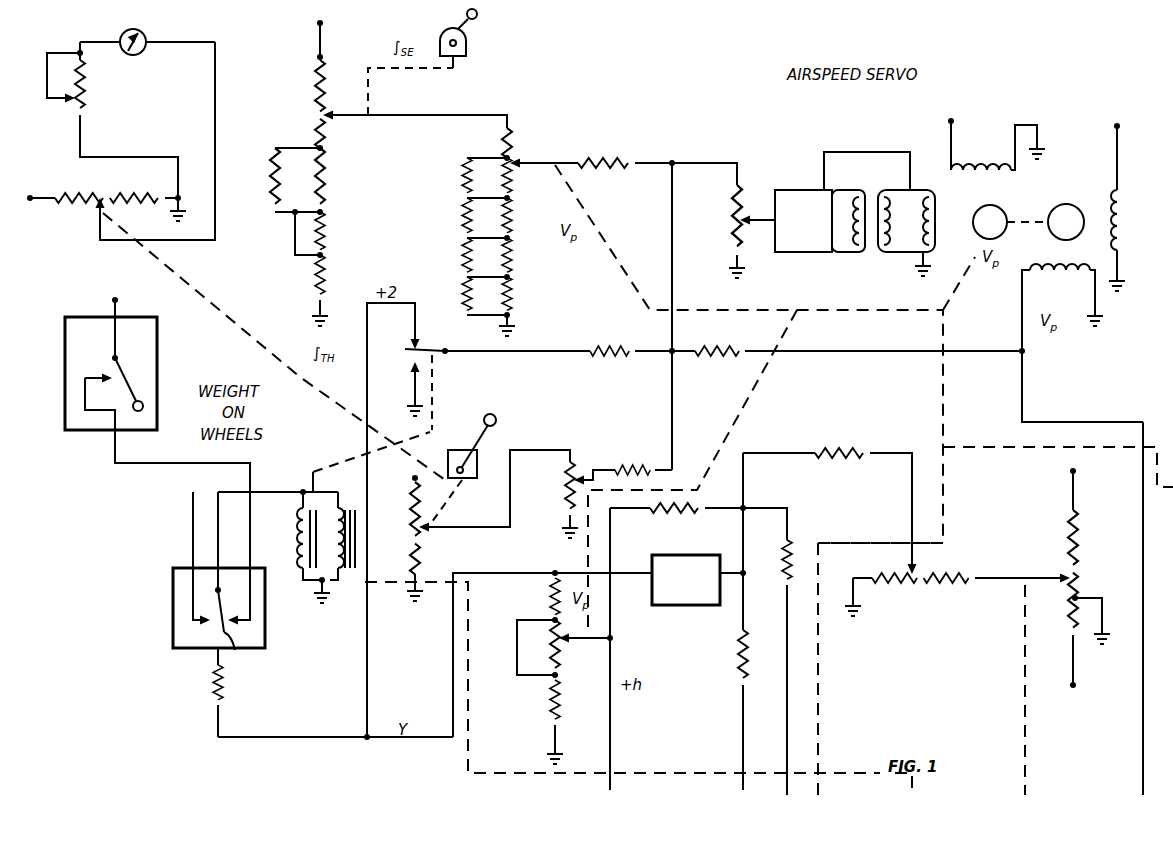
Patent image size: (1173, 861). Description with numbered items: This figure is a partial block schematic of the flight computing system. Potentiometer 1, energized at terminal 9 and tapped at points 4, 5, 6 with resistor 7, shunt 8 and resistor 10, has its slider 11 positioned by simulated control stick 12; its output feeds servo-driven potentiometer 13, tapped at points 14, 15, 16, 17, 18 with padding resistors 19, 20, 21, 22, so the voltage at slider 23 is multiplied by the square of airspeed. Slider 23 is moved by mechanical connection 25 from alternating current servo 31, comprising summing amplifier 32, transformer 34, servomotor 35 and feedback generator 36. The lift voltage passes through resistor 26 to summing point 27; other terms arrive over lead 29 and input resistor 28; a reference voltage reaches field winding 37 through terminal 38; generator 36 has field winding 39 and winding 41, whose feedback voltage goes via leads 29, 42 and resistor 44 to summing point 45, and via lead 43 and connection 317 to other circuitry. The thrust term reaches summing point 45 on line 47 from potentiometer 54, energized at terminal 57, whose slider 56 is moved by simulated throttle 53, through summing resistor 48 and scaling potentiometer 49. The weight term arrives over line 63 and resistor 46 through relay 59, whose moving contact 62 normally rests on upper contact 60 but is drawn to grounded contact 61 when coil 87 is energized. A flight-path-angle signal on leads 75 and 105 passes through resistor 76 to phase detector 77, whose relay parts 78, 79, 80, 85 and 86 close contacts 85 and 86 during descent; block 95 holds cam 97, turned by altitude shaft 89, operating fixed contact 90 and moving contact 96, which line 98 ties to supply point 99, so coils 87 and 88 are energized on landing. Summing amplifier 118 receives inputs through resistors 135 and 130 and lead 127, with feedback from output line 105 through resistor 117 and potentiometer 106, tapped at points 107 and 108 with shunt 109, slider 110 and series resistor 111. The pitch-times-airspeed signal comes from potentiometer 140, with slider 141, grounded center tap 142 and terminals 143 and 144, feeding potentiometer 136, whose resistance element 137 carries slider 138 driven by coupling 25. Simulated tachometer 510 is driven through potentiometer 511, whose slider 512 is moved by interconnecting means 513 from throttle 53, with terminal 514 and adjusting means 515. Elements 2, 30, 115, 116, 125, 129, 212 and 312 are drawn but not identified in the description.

The potentiometer 1 is at (340, 183).
The resistor section 2 is at (323, 235).
The tapping point 4 is at (323, 148).
The tapping point 5 is at (323, 212).
The tapping point 6 is at (323, 257).
The resistor 7 is at (272, 178).
The shunt 8 is at (294, 238).
The terminal 9 is at (323, 25).
The resistor 10 is at (323, 285).
The slider 11 is at (333, 113).
The simulated control stick 12 is at (470, 44).
The servo-driven potentiometer 13 is at (545, 288).
The tapping point 14 is at (512, 150).
The tapping point 15 is at (510, 198).
The tapping point 16 is at (510, 238).
The tapping point 17 is at (510, 277).
The tapping point 18 is at (510, 315).
The padding resistor 19 is at (464, 178).
The padding resistor 20 is at (464, 216).
The padding resistor 21 is at (464, 254).
The padding resistor 22 is at (464, 292).
The slider 23 is at (530, 163).
The mechanical connection 25 is at (607, 242).
The resistor 26 is at (622, 162).
The summing point 27 is at (718, 163).
The input resistor 28 is at (745, 195).
The lead 29 is at (675, 272).
The wiper 30 is at (760, 222).
The alternating current servo 31 is at (905, 125).
The summing amplifier 32 is at (808, 250).
The transformer 34 is at (870, 192).
The alternating current servomotor 35 is at (1003, 213).
The alternating current feedback generator 36 is at (1052, 238).
The field winding 37 is at (1015, 172).
The terminal 38 is at (955, 120).
The field winding 39 is at (1120, 236).
The field winding 41 is at (1072, 278).
The lead 42 is at (835, 350).
The lead 43 is at (1090, 421).
The resistor 44 is at (745, 350).
The summing point 45 is at (682, 339).
The resistor 46 is at (634, 350).
The line 47 is at (687, 410).
The summing resistor 48 is at (643, 466).
The potentiometer 49 is at (582, 462).
The simulated throttle 53 is at (480, 445).
The potentiometer 54 is at (425, 522).
The slider 56 is at (425, 540).
The terminal 57 is at (412, 480).
The relay 59 is at (433, 345).
The upper contact 60 is at (412, 342).
The grounded contact 61 is at (410, 368).
The moving contact 62 is at (437, 358).
The line 63 is at (366, 655).
The lead 75 is at (330, 735).
The resistor 76 is at (224, 690).
The phase detector 77 is at (262, 642).
The lead 78 is at (191, 540).
The line 79 is at (248, 540).
The relay part 80 is at (218, 525).
The fixed contact 85 is at (268, 616).
The contact 86 is at (233, 650).
The relay coil 87 is at (295, 540).
The relay coil 88 is at (328, 583).
The output shaft 89 is at (140, 415).
The fixed contact 90 is at (100, 380).
The block 95 is at (150, 375).
The moving contact 96 is at (110, 356).
The cam 97 is at (145, 403).
The line 98 is at (120, 305).
The supply point 99 is at (113, 296).
The output line 105 is at (448, 740).
The servo-driven potentiometer 106 is at (537, 692).
The tapping point 107 is at (550, 610).
The tapping point 108 is at (559, 676).
The shunt 109 is at (515, 645).
The slider 110 is at (568, 643).
The series resistor 111 is at (560, 696).
The junction 115 is at (613, 642).
The conductor 116 is at (620, 712).
The resistor 117 is at (672, 512).
The summing amplifier 118 is at (690, 560).
The conductor 125 is at (612, 605).
The lead 127 is at (742, 745).
The conductor 129 is at (770, 507).
The resistor 130 is at (793, 550).
The resistor 135 is at (878, 443).
The servo-driven potentiometer 136 is at (942, 597).
The resistance element 137 is at (975, 577).
The slider 138 is at (918, 572).
The servo-driven potentiometer 140 is at (1052, 546).
The slider 141 is at (1062, 584).
The center tap 142 is at (1080, 597).
The terminal 143 is at (1078, 472).
The terminal 144 is at (1078, 686).
The linkage 212 is at (1068, 450).
The unit enclosure 312 is at (824, 662).
The connection 317 is at (1144, 563).
The simulated tachometer 510 is at (147, 35).
The potentiometer 511 is at (85, 205).
The slider 512 is at (108, 205).
The mechanical interconnecting means 513 is at (222, 315).
The terminal 514 is at (30, 203).
The adjusting potentiometer means 515 is at (38, 93).